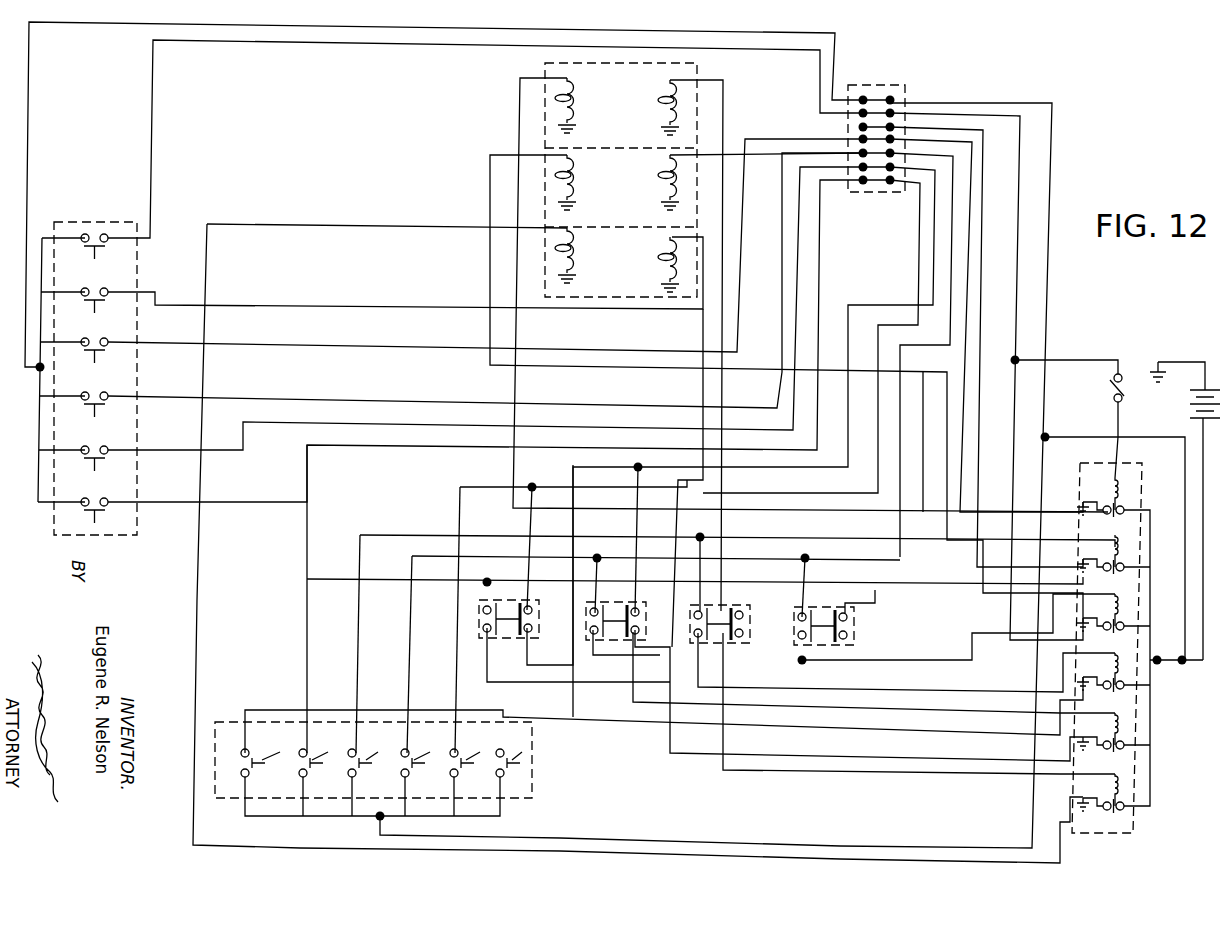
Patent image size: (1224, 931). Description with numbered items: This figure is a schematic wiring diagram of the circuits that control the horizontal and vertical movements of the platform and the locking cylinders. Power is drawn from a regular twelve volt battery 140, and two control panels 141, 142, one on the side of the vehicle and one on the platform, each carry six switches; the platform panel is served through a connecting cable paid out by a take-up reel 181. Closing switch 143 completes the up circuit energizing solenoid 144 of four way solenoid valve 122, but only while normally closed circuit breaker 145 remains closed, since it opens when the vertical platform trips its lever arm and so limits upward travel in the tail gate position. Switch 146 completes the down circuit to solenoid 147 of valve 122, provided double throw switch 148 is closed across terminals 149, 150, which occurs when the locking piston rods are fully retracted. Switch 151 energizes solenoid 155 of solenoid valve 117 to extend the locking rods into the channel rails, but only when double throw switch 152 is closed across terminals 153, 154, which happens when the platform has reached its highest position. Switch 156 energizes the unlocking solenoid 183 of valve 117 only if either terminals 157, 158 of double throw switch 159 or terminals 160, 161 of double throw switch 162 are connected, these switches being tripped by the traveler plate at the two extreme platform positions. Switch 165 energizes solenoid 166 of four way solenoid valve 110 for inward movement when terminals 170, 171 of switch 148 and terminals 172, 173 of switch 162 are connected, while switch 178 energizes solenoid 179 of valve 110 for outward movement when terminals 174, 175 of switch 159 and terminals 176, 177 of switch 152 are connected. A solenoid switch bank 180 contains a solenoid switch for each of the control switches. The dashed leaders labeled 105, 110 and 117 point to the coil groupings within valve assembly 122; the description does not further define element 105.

The relay coil unit 105 is at (502, 108).
The four way solenoid valve 110 is at (486, 278).
The solenoid valve 117 is at (491, 195).
The four way solenoid valve 122 is at (700, 64).
The battery 140 is at (1188, 414).
The control panel 141 is at (533, 770).
The control panel 142 is at (107, 391).
The switch 143 is at (92, 252).
The solenoid 144 is at (578, 111).
The circuit breaker 145 is at (1112, 382).
The switch 146 is at (90, 310).
The solenoid 147 is at (662, 115).
The double throw switch 148 is at (450, 651).
The terminal 149 is at (452, 610).
The terminal 150 is at (452, 630).
The switch 151 is at (90, 360).
The double throw switch 152 is at (760, 669).
The terminal 153 is at (741, 574).
The terminal 154 is at (680, 665).
The solenoid 155 is at (578, 185).
The switch 156 is at (90, 414).
The terminal 157 is at (555, 581).
The terminal 158 is at (565, 649).
The double throw switch 159 is at (589, 669).
The terminal 160 is at (783, 597).
The terminal 161 is at (781, 647).
The double throw switch 162 is at (812, 612).
The switch 165 is at (90, 468).
The solenoid 166 is at (664, 262).
The terminal 170 is at (522, 608).
The terminal 171 is at (512, 654).
The terminal 172 is at (882, 615).
The terminal 173 is at (882, 639).
The terminal 174 is at (612, 605).
The terminal 175 is at (633, 667).
The terminal 176 is at (725, 612).
The terminal 177 is at (769, 627).
The switch 178 is at (90, 520).
The solenoid 179 is at (579, 264).
The solenoid switch bank 180 is at (1105, 838).
The take-up reel 181 is at (902, 85).
The solenoid 183 is at (660, 188).